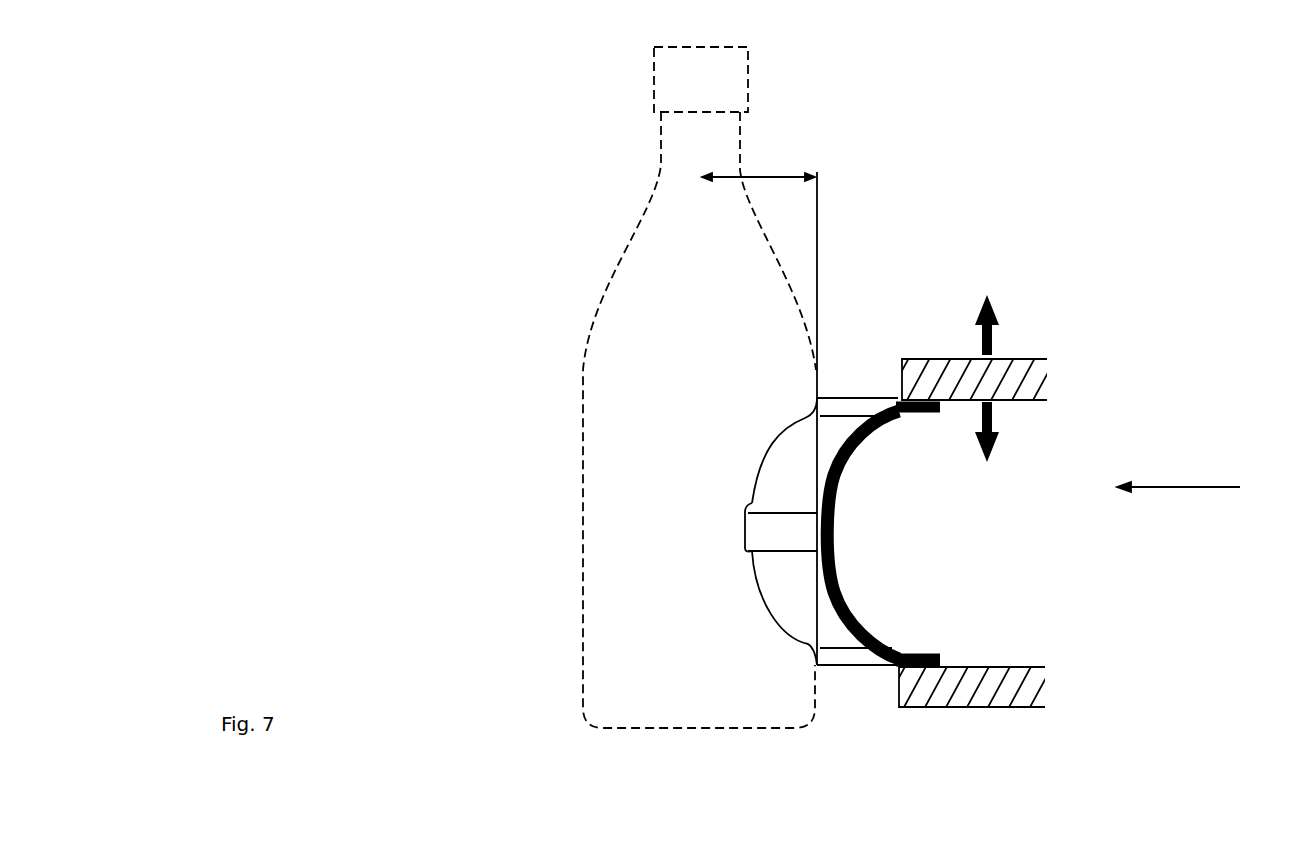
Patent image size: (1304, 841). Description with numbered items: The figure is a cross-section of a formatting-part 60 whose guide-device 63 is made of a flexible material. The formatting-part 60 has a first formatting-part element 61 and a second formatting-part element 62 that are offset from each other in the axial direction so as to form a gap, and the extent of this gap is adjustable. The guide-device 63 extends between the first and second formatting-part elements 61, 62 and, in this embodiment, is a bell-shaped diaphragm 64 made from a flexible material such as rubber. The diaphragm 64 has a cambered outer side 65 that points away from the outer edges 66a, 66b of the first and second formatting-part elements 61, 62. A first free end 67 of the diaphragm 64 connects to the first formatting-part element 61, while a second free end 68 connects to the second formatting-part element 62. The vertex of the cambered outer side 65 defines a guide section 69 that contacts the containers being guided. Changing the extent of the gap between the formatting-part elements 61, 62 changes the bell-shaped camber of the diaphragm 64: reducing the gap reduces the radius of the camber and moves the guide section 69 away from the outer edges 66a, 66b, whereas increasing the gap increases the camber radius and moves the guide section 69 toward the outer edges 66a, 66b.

The formatting-part 60 is at (1142, 208).
The first formatting-part element 61 is at (1008, 699).
The second formatting-part element 62 is at (1037, 372).
The guide-device 63 is at (1194, 490).
The bell-shaped diaphragm 64 is at (858, 610).
The cambered outer side 65 is at (832, 470).
The outer edge of the first formatting-part element 66a is at (902, 377).
The outer edge of the second formatting-part element 66b is at (895, 685).
The first free end 67 is at (940, 652).
The second free end 68 is at (928, 412).
The guide section 69 is at (817, 532).